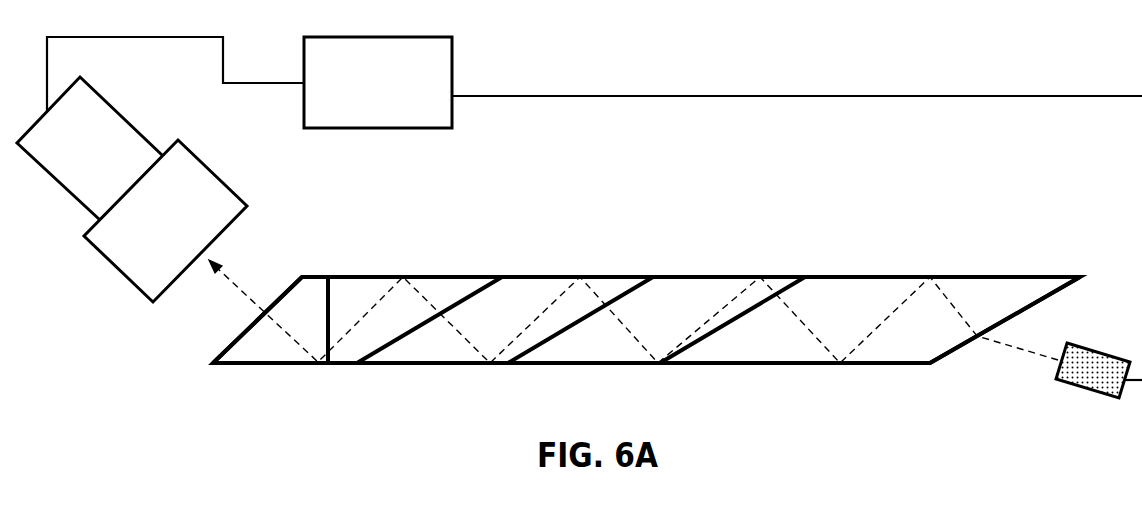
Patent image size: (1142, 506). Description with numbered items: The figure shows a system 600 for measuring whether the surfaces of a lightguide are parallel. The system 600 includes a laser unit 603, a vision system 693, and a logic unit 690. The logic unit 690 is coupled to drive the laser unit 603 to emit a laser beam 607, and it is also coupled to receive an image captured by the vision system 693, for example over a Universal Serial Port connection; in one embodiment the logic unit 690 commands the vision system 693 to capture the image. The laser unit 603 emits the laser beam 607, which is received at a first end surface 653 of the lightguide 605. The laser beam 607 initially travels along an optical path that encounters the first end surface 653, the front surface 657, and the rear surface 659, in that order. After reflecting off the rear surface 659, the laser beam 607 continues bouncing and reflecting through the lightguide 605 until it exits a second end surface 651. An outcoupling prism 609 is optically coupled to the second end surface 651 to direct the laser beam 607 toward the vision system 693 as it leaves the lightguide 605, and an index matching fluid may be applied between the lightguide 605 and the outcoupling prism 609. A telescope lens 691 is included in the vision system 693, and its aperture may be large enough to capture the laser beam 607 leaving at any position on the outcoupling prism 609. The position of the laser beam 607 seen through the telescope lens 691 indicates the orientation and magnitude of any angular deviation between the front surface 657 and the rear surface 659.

The system 600 is at (1133, 77).
The laser unit 603 is at (1090, 392).
The lightguide 605 is at (716, 253).
The laser beam 607 is at (239, 278).
The outcoupling prism 609 is at (273, 381).
The second end surface 651 is at (331, 300).
The first end surface 653 is at (1071, 283).
The front surface 657 is at (660, 277).
The rear surface 659 is at (632, 366).
The logic unit 690 is at (392, 105).
The telescope lens 691 is at (187, 245).
The vision system 693 is at (107, 186).